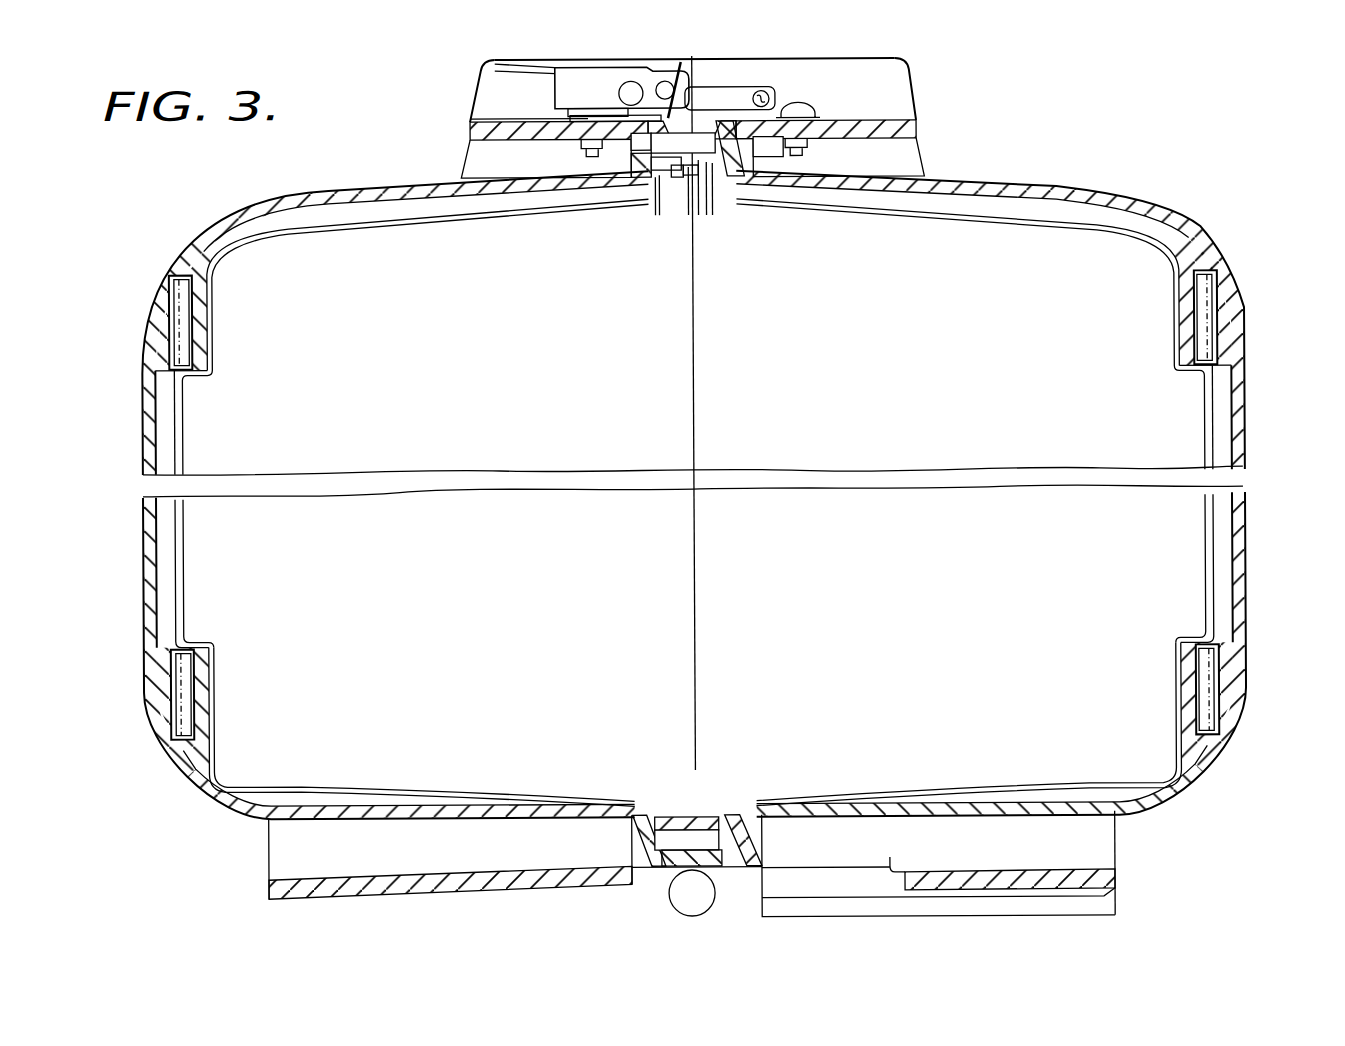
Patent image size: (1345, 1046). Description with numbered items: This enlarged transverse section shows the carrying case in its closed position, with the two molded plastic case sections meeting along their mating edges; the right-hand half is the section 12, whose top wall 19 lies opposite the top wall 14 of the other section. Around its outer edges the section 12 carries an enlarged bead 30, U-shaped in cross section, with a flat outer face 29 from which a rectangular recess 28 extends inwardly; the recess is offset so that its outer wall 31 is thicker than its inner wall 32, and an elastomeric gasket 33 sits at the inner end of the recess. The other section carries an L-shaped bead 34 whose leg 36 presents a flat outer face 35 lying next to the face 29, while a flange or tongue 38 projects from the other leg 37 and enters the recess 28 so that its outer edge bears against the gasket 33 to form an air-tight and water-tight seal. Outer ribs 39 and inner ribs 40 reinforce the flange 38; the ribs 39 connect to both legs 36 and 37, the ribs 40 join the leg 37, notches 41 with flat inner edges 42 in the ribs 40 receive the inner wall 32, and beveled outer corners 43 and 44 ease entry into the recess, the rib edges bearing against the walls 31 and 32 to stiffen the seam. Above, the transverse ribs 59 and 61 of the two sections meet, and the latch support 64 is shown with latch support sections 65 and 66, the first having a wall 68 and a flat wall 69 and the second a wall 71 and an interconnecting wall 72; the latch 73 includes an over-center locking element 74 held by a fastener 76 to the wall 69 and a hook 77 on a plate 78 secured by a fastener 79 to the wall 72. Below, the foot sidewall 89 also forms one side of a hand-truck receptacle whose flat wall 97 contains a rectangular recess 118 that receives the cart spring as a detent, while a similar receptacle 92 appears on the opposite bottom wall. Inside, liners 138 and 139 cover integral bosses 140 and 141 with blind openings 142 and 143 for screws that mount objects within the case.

The case section 12 is at (1246, 339).
The top wall 14 is at (557, 800).
The top wall 19 is at (969, 723).
The recess 28 is at (700, 167).
The flat outer face 29 is at (685, 524).
The bead 30 is at (766, 828).
The outer wall 31 is at (772, 99).
The inner wall 32 is at (714, 173).
The gasket 33 is at (746, 815).
The bead 34 is at (630, 830).
The flat outer face 35 is at (696, 168).
The leg 36 is at (683, 118).
The leg 37 is at (637, 174).
The flange 38 is at (675, 165).
The outer ribs 39 is at (645, 141).
The inner ribs 40 is at (657, 178).
The notches 41 is at (707, 172).
The flat inner edges 42 is at (690, 167).
The outer corner 43 is at (724, 121).
The outer corner 44 is at (726, 172).
The transverse rib 59 is at (143, 402).
The transverse rib 61 is at (1234, 501).
The latch support 64 is at (831, 50).
The latch support section 65 is at (462, 165).
The latch support section 66 is at (926, 165).
The wall 68 is at (484, 92).
The flat wall 69 is at (519, 130).
The wall 71 is at (902, 88).
The interconnecting wall 72 is at (907, 127).
The latch 73 is at (683, 62).
The over-center locking element 74 is at (587, 72).
The fastener 76 is at (590, 152).
The hook 77 is at (759, 88).
The plate 78 is at (821, 117).
The fastener 79 is at (806, 152).
The sidewall 89 is at (1113, 842).
The receptacle 92 is at (290, 898).
The flat wall 97 is at (1030, 878).
The rectangular recess 118 is at (893, 874).
The liner 138 is at (183, 602).
The liner 139 is at (1178, 503).
The bosses 140 is at (200, 327).
The bosses 141 is at (1165, 502).
The blind openings 142 is at (186, 352).
The blind openings 143 is at (1163, 502).